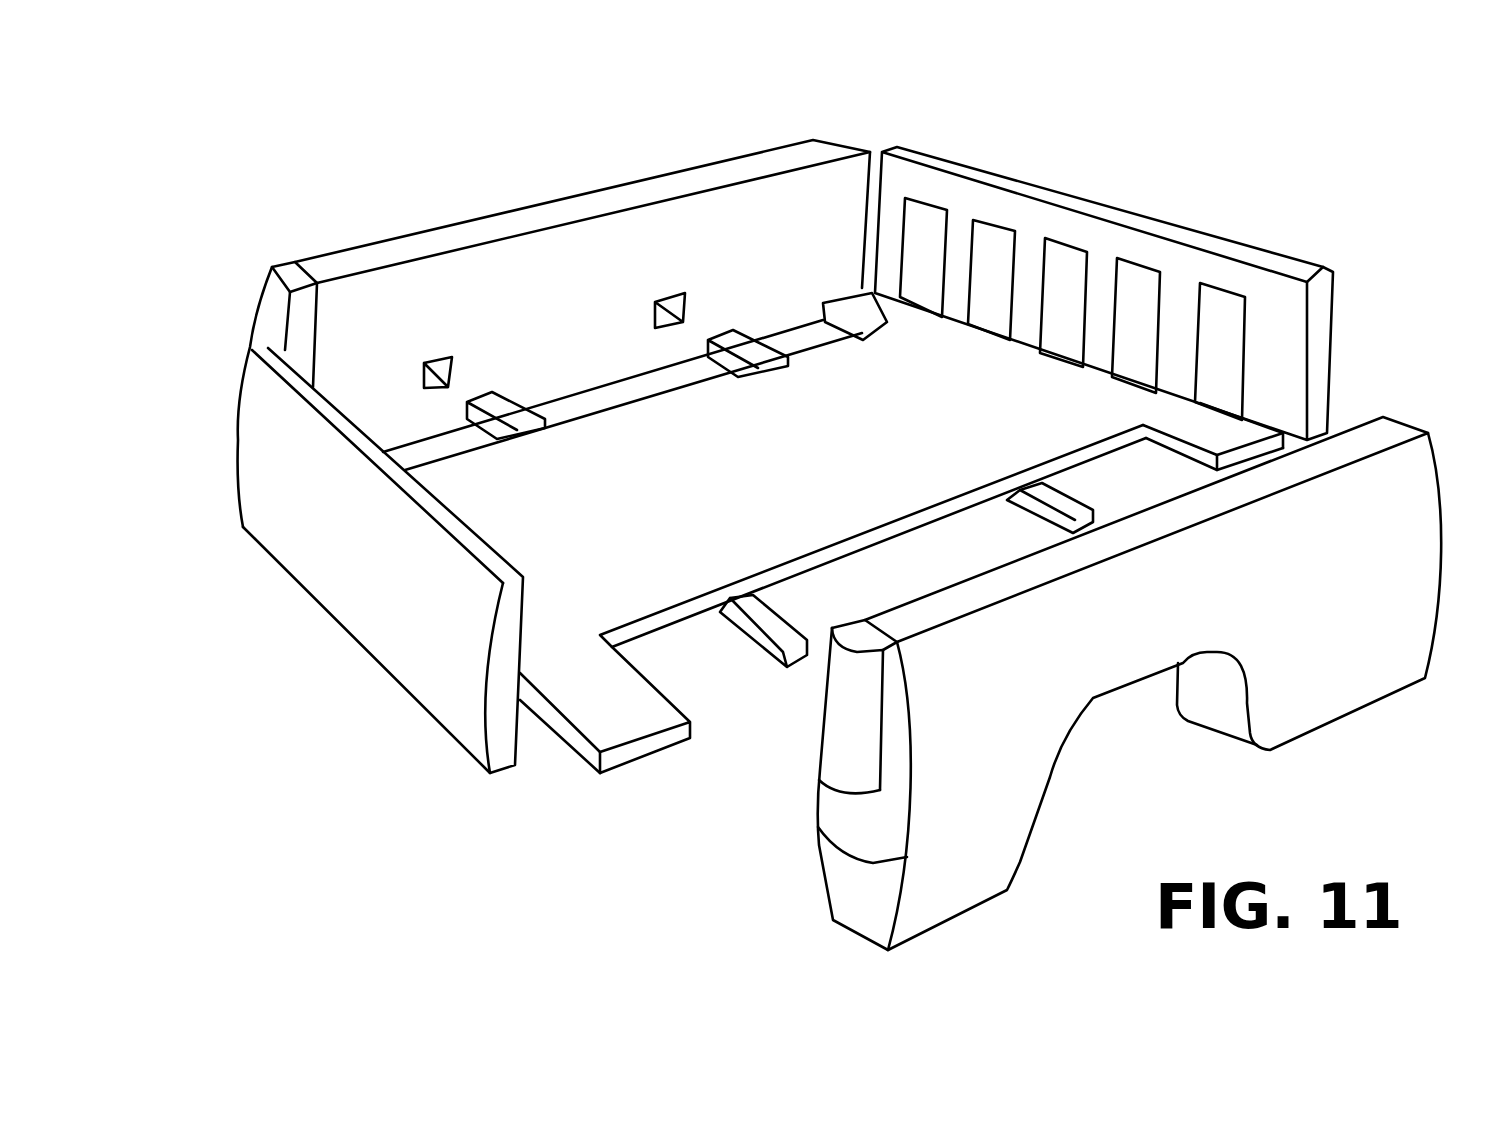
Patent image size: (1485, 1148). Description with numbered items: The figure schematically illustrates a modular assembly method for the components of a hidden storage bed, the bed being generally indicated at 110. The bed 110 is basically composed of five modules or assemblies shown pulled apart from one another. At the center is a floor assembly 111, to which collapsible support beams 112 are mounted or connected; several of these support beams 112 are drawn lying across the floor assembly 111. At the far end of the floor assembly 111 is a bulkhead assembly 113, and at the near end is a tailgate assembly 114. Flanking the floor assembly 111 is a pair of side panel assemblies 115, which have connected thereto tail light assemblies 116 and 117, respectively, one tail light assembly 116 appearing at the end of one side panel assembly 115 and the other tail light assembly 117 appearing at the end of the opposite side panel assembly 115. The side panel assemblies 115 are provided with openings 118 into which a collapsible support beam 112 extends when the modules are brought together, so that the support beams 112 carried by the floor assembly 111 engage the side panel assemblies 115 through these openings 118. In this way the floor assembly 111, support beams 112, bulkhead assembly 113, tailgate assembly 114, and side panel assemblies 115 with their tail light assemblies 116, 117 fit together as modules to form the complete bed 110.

The bed 110 is at (1367, 372).
The floor assembly 111 is at (773, 481).
The collapsible support beams 112 is at (488, 410).
The bulkhead assembly 113 is at (1147, 223).
The tailgate assembly 114 is at (357, 585).
The side panel assemblies 115 is at (588, 275).
The tail light assembly 116 is at (272, 316).
The tail light assembly 117 is at (847, 812).
The openings 118 is at (448, 357).